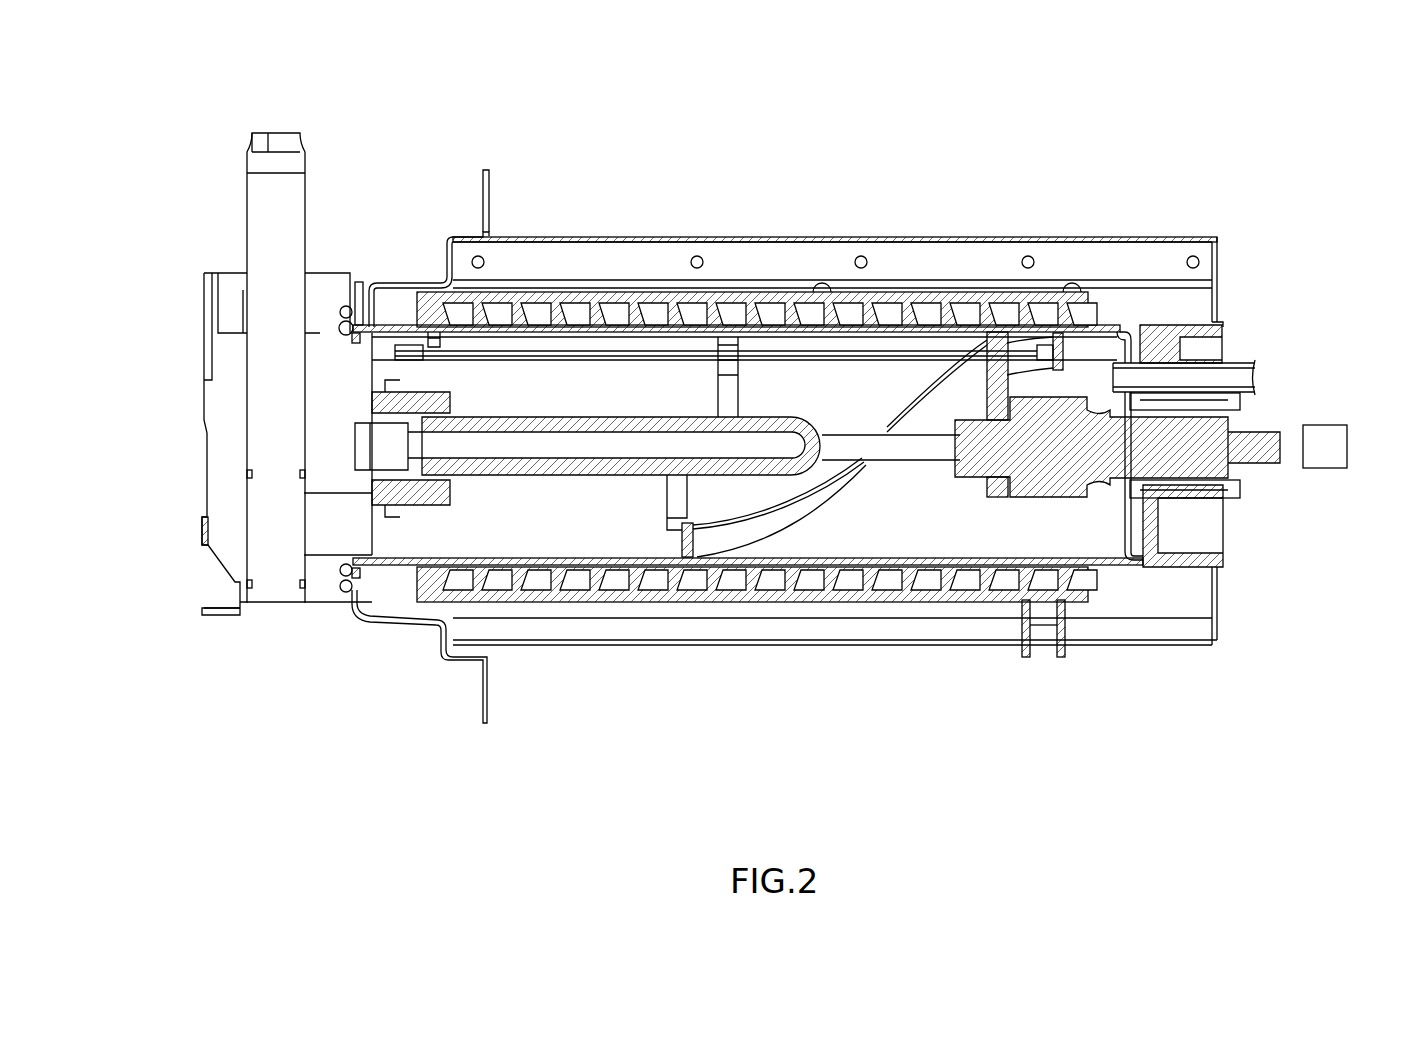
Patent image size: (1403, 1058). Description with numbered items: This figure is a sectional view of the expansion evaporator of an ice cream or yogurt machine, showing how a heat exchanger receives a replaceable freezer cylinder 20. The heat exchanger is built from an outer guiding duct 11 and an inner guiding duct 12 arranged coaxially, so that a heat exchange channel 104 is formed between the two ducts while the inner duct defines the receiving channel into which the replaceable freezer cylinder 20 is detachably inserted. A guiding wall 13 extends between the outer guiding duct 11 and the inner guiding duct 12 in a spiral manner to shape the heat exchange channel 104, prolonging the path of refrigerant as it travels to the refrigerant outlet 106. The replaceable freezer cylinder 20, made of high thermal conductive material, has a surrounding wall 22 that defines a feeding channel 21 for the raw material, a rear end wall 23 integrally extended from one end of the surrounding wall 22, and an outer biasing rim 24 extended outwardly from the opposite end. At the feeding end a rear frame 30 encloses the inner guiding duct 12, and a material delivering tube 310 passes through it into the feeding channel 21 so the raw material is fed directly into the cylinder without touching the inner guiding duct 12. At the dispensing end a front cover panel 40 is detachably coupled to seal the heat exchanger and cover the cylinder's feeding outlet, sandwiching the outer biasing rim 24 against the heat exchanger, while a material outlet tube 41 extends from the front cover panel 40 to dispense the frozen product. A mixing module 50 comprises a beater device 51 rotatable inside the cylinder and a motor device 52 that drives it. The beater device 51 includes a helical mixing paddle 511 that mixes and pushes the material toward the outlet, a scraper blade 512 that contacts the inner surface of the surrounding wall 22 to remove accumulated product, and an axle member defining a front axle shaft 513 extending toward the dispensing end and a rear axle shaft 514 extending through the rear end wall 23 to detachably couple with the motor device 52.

The outer guiding duct 11 is at (800, 298).
The inner guiding duct 12 is at (889, 320).
The guiding wall 13 is at (836, 298).
The replaceable freezer cylinder 20 is at (662, 728).
The feeding channel 21 is at (588, 542).
The surrounding wall 22 is at (653, 560).
The rear end wall 23 is at (1120, 575).
The outer biasing rim 24 is at (357, 605).
The rear frame 30 is at (1185, 493).
The material delivering tube 310 is at (1246, 365).
The front cover panel 40 is at (222, 318).
The material outlet tube 41 is at (262, 238).
The mixing module 50 is at (1200, 145).
The beater device 51 is at (1130, 174).
The mixing paddle 511 is at (968, 372).
The scraper blade 512 is at (957, 347).
The front axle shaft 513 is at (548, 425).
The rear axle shaft 514 is at (1055, 415).
The motor device 52 is at (1280, 446).
The heat exchange channel 104 is at (710, 303).
The refrigerant outlet 106 is at (1062, 657).